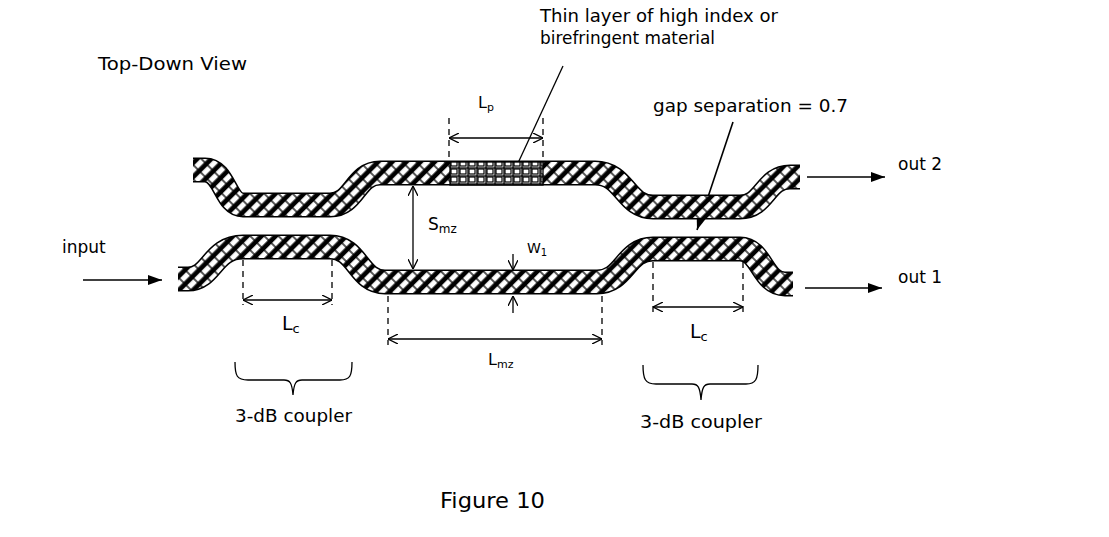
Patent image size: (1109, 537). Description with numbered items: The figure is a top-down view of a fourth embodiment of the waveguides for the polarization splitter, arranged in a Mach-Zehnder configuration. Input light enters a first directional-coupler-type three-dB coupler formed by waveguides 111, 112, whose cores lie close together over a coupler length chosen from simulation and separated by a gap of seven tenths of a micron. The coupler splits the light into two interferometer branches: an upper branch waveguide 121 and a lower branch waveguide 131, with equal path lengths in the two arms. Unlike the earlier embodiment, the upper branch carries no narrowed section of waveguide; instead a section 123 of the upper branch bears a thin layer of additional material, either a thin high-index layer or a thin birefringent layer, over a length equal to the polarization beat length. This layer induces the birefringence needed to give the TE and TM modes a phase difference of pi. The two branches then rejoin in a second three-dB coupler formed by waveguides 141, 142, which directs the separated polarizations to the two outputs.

The 3-dB coupler waveguide 111 is at (240, 192).
The 3-dB coupler waveguide 112 is at (193, 292).
The upper branch waveguide 121 is at (367, 163).
The section of waveguide with thin layer 123 is at (464, 168).
The lower branch waveguide 131 is at (448, 292).
The 3-dB coupler waveguide 141 is at (671, 196).
The 3-dB coupler waveguide 142 is at (717, 262).